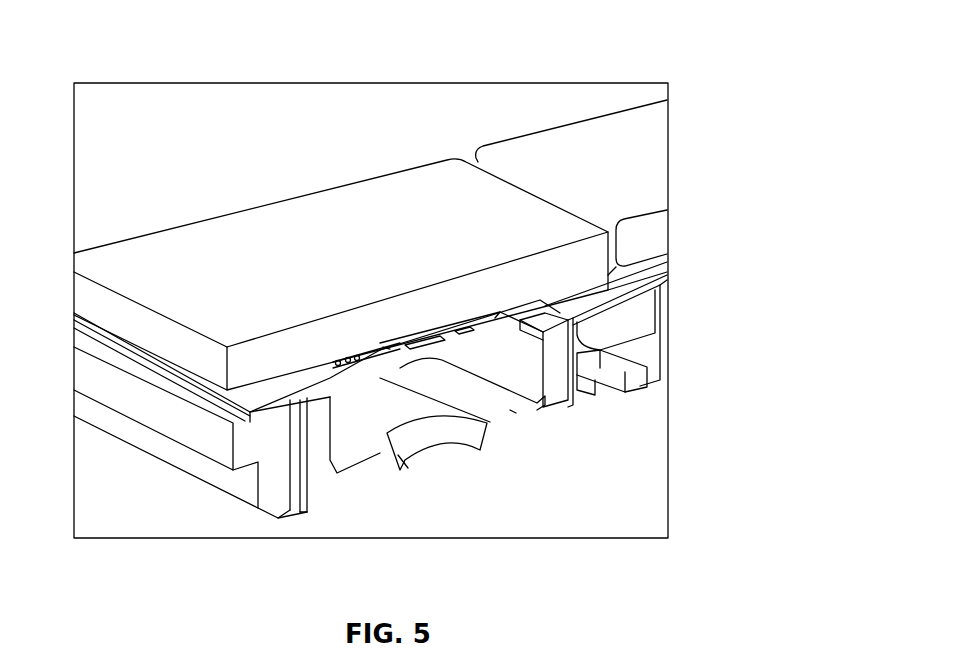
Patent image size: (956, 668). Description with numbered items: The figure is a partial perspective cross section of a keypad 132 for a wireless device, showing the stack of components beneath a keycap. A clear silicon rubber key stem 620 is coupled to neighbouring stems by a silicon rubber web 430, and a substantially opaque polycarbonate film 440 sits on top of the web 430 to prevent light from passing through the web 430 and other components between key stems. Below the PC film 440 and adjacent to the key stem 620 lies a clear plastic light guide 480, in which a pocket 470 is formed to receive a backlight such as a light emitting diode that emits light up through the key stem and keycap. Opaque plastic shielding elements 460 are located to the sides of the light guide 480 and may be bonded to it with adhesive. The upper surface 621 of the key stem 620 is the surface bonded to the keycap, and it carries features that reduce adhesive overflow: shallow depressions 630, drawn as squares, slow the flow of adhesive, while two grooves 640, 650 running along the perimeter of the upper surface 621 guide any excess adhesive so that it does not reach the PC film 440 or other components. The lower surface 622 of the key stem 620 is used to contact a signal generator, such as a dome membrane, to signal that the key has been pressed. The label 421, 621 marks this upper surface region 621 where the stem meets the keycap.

The keypad 132 is at (363, 114).
The opaque plastic elements 460 is at (227, 493).
The silicon rubber web 430 is at (560, 315).
The polycarbonate film 440 is at (632, 295).
The pocket 470 is at (623, 367).
The light guide 480 is at (652, 333).
The key stem 620 is at (513, 410).
The contact 421 is at (513, 412).
The upper surface of key stem 621 is at (513, 412).
The lower surface of key stem 622 is at (385, 348).
The depressions 630 is at (363, 358).
The groove 640 is at (337, 365).
The groove 650 is at (353, 362).